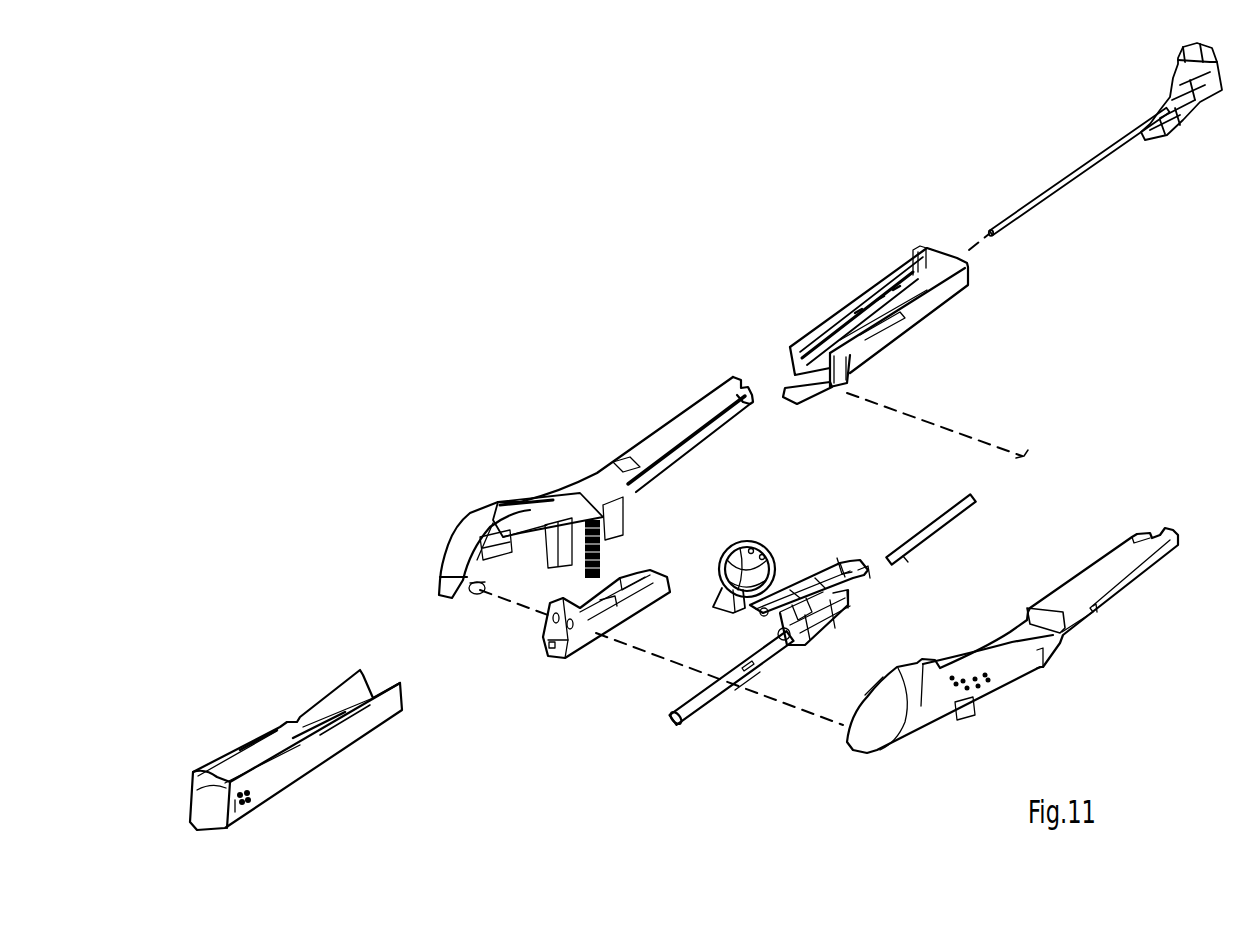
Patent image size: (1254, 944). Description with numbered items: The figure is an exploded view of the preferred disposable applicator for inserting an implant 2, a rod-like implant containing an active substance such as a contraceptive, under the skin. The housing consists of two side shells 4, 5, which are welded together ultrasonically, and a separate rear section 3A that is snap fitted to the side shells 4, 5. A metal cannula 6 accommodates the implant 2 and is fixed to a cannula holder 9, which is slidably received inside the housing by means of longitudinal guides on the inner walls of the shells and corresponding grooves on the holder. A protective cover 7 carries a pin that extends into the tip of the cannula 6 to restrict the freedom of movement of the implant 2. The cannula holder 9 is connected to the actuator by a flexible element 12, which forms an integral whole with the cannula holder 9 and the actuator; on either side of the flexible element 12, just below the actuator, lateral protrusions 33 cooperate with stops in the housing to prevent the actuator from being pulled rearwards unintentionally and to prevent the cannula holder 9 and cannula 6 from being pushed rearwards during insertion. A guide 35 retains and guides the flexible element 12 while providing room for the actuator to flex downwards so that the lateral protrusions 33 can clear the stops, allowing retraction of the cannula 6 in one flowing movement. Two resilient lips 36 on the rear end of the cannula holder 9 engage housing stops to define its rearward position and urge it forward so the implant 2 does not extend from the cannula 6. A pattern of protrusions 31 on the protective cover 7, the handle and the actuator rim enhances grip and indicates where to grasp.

The implant 2 is at (944, 517).
The rear section 3A is at (944, 292).
The side shell 4 is at (668, 432).
The side shell 5 is at (1128, 560).
The metal cannula 6 is at (694, 709).
The protective cover 7 is at (310, 762).
The cannula holder 9 is at (852, 597).
The flexible element 12 is at (818, 578).
The protrusions 31 is at (749, 544).
The lateral protrusions 33 is at (760, 613).
The guide 35 is at (540, 517).
The resilient lips 36 is at (853, 535).